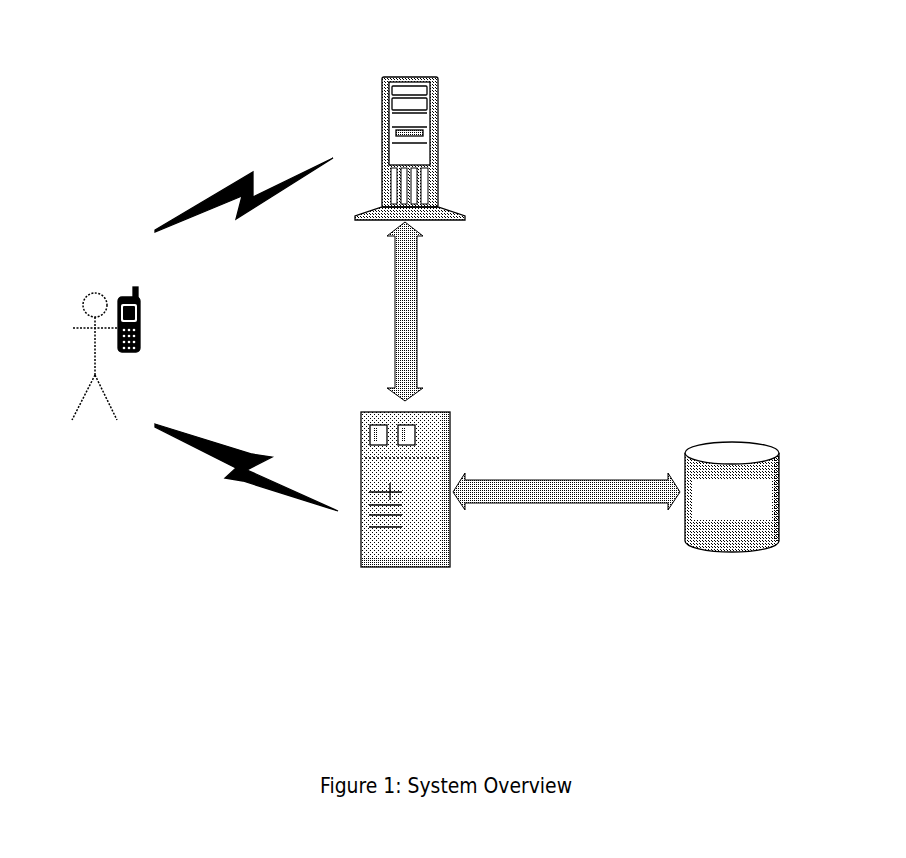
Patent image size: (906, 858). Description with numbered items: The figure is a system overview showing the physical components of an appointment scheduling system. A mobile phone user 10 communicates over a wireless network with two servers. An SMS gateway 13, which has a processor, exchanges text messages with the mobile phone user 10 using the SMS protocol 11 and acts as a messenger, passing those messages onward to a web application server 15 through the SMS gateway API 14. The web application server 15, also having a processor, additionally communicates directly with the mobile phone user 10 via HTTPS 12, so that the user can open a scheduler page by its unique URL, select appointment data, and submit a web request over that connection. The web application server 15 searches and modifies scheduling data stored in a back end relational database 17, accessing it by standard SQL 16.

The mobile phone user 10 is at (83, 290).
The SMS protocol 11 is at (213, 185).
The HTTPS protocol 12 is at (247, 482).
The SMS gateway 13 is at (410, 76).
The SMS gateway API 14 is at (418, 298).
The web application server 15 is at (446, 405).
The SQL 16 is at (563, 478).
The back end relational database 17 is at (743, 438).